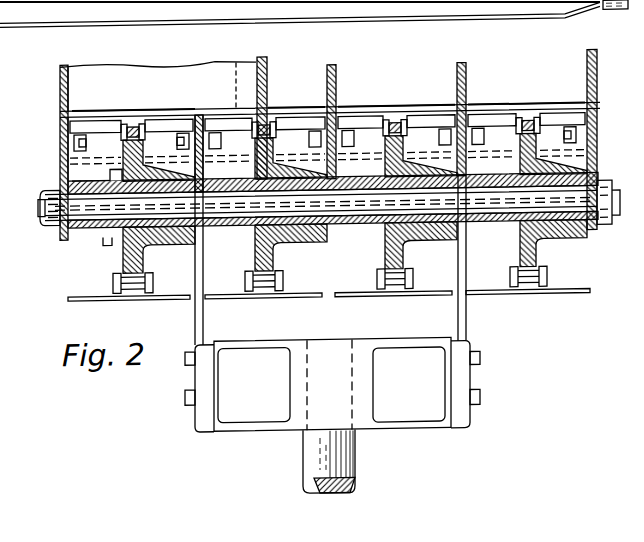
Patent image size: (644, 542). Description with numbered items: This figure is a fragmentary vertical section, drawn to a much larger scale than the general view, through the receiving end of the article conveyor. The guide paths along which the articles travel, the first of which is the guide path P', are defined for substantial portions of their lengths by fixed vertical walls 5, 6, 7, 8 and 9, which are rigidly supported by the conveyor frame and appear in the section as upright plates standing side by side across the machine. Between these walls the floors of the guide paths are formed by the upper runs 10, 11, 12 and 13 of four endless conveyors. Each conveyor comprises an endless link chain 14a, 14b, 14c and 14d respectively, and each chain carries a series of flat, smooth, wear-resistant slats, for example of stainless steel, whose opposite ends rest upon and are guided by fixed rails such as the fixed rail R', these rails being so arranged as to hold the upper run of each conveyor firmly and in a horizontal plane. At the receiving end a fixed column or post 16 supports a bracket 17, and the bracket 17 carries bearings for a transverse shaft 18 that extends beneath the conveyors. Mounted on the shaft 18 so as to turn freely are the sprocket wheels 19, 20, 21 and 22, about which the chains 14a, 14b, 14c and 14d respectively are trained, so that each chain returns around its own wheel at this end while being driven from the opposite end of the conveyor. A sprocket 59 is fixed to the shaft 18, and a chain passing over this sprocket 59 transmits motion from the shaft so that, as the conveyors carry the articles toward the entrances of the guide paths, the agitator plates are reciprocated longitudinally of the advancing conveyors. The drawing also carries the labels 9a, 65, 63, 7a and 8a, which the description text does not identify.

The guide rail 9a is at (63, 19).
The conveyor bar 65 is at (116, 0).
The conveyor bar 63 is at (168, 0).
The frame bar 7a is at (248, 0).
The frame bar 8a is at (291, 0).
The fixed vertical wall 7 is at (343, 0).
The fixed vertical wall 8 is at (384, 0).
The fixed vertical wall 9 is at (427, 19).
The upper run 10 is at (118, 106).
The fixed vertical wall 6 is at (238, 118).
The fixed vertical wall 5 is at (60, 94).
The guide path P' is at (133, 76).
The fixed rail R' is at (372, 116).
The upper run 11 is at (274, 115).
The upper run 12 is at (372, 115).
The upper run 13 is at (540, 118).
The transverse shaft 18 is at (578, 204).
The sprocket 59 is at (108, 236).
The sprocket wheel 19 is at (126, 253).
The sprocket wheel 20 is at (256, 255).
The sprocket wheel 21 is at (386, 256).
The sprocket wheel 22 is at (526, 253).
The endless link chain 14a is at (164, 277).
The endless link chain 14b is at (284, 286).
The endless link chain 14c is at (412, 286).
The endless link chain 14d is at (550, 290).
The bracket 17 is at (466, 331).
The fixed column or post 16 is at (352, 456).